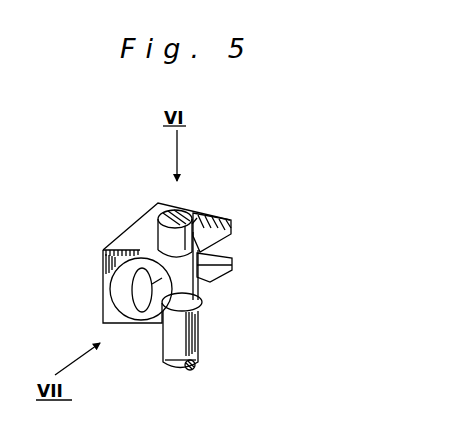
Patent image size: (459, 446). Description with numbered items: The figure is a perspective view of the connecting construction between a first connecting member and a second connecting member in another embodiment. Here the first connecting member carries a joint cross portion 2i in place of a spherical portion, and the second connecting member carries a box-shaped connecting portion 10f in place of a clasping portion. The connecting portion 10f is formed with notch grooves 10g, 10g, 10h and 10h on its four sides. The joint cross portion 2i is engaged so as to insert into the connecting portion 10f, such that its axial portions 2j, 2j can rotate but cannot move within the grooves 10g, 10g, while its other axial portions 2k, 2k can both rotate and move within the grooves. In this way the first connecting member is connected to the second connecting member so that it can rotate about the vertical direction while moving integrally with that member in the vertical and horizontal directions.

The box-shaped connecting portion 10f is at (133, 222).
The notch grooves 10g is at (197, 217).
The notch grooves 10h is at (122, 292).
The joint cross portion 2i is at (203, 353).
The axial portions 2j is at (180, 221).
The axial portions 2k is at (231, 260).